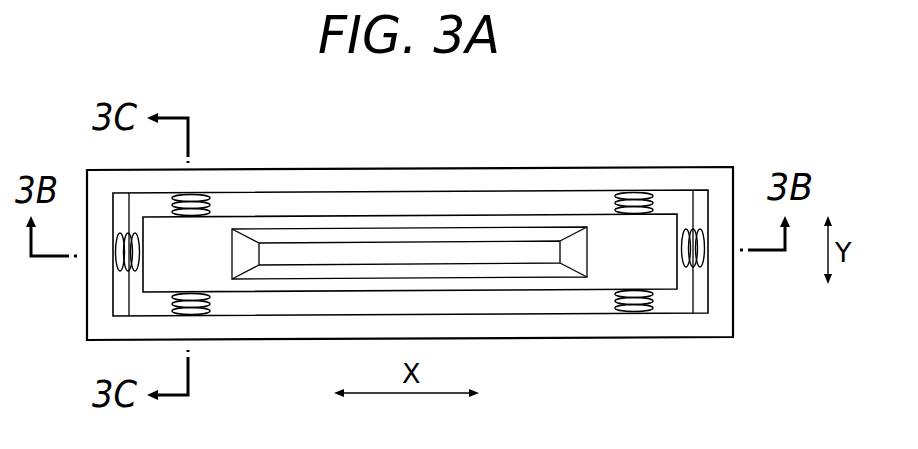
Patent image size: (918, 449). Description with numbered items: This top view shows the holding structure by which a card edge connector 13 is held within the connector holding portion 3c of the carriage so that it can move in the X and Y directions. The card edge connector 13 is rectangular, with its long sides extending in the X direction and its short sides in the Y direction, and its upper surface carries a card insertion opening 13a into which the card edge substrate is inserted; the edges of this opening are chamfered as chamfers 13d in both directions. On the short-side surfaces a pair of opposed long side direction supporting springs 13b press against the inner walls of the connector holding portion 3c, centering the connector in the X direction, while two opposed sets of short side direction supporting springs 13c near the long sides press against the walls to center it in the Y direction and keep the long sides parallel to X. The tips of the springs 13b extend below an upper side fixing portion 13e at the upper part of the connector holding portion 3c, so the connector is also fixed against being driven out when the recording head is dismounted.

The connector holding portion 3c is at (603, 175).
The card edge connector 13 is at (530, 222).
The card insertion opening 13a is at (401, 254).
The long side direction supporting springs 13b is at (127, 273).
The short side direction supporting springs 13c is at (655, 200).
The chamfers 13d is at (245, 238).
The upper side fixing portion 13e is at (142, 318).